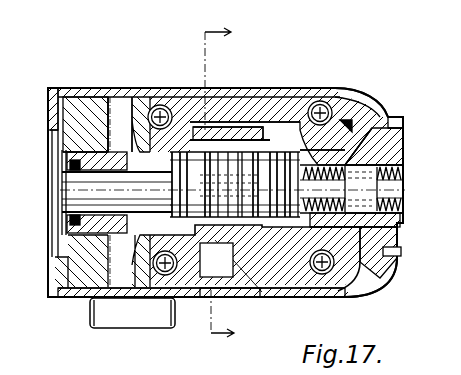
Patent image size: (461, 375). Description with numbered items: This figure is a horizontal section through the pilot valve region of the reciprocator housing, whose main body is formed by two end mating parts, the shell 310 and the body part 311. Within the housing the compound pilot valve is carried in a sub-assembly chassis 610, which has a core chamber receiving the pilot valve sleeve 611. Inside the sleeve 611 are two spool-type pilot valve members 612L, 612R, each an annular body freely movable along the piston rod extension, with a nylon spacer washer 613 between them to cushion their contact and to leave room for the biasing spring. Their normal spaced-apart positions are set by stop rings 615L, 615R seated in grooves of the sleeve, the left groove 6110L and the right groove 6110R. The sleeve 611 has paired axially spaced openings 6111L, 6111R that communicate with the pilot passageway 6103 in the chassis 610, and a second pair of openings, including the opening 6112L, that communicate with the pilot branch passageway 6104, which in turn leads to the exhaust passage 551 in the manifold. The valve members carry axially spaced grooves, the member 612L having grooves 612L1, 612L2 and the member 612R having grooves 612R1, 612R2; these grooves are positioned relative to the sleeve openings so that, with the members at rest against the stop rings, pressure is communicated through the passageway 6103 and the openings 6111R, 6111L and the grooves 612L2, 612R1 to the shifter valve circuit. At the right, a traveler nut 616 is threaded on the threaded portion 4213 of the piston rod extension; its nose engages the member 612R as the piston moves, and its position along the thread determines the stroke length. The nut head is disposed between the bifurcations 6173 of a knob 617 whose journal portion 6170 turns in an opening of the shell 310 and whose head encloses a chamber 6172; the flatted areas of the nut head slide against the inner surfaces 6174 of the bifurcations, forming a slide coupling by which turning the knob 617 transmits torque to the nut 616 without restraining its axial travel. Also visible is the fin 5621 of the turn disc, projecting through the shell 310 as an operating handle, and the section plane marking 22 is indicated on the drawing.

The body part 311 is at (46, 88).
The stop ring 615L is at (100, 96).
The groove 6110L is at (135, 105).
The groove 612L1 is at (172, 112).
The pilot valve member 612L is at (110, 130).
The sleeve opening 6112L is at (188, 125).
The section line 22- 22 is at (229, 23).
The groove 612L2 is at (218, 128).
The passage 551 is at (236, 128).
The pilot branch passageway 6104 is at (250, 100).
The groove 612R1 is at (270, 140).
The pilot valve member 612R is at (292, 140).
The groove 612R2 is at (300, 135).
The right upper screw 6110R is at (328, 112).
The stop ring 615R is at (340, 118).
The body part shell 310 is at (357, 110).
The pilot valve sleeve 611 is at (380, 113).
The knob bifurcations 6173 is at (394, 123).
The inner surfaces 6174 is at (400, 140).
The chamber 6172 is at (400, 167).
The threaded portion 4213 is at (400, 189).
The traveler nut 616 is at (402, 207).
The knob 617 is at (392, 243).
The journal portion 6170 is at (381, 277).
The sub-assembly chassis 610 is at (338, 289).
The sleeve opening 6111R is at (292, 272).
The pilot passageway 6103 is at (257, 287).
The spacer washer 613 is at (229, 289).
The sleeve opening 6111L is at (195, 289).
The fin 5621 is at (118, 320).